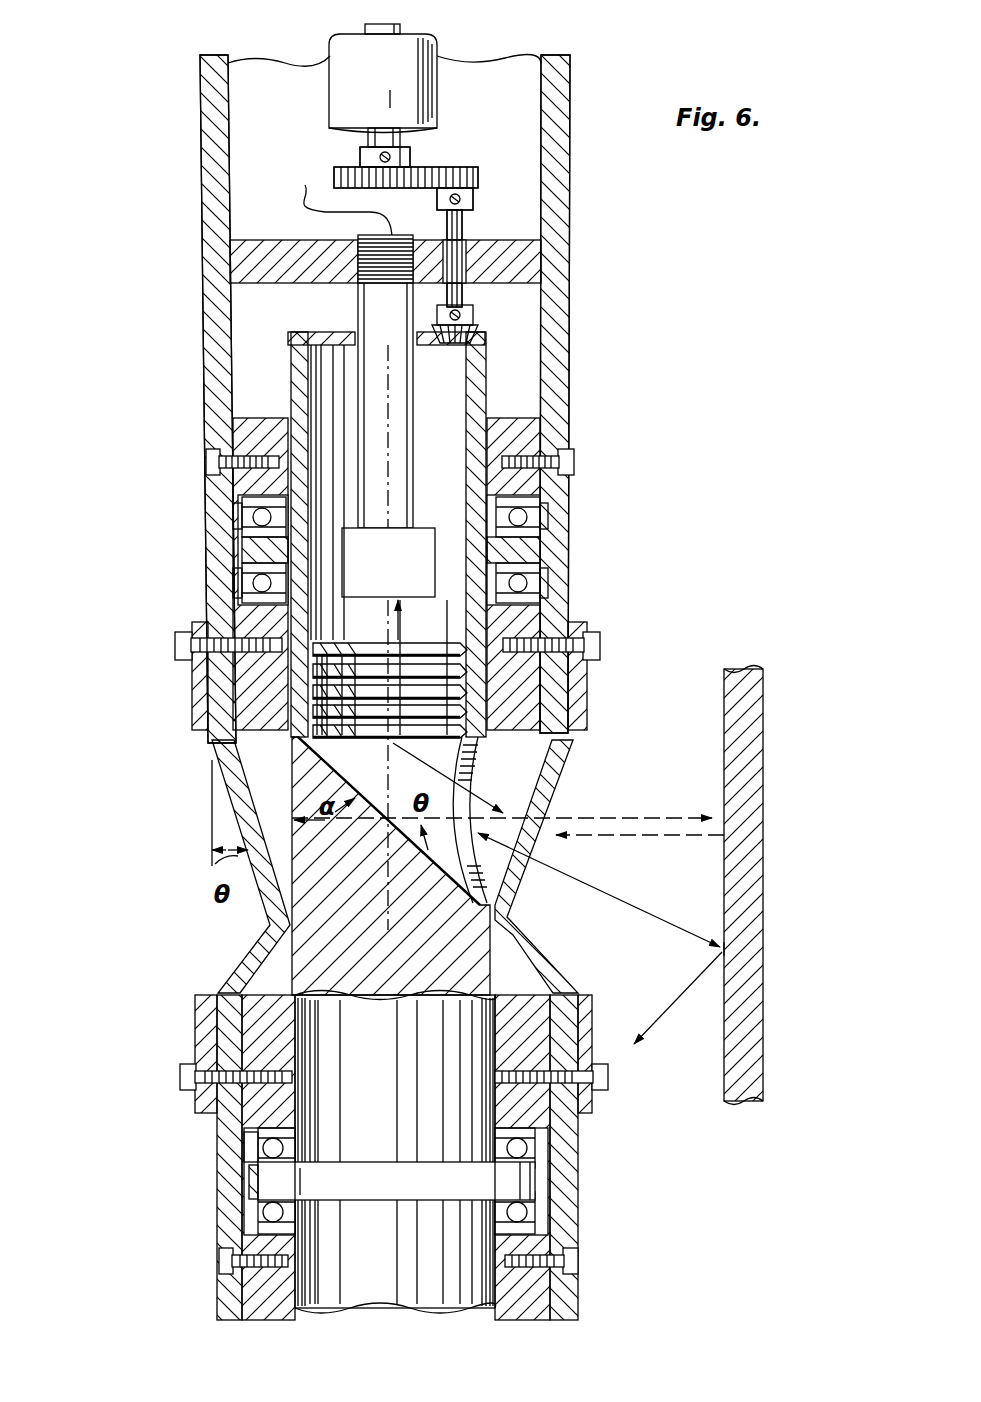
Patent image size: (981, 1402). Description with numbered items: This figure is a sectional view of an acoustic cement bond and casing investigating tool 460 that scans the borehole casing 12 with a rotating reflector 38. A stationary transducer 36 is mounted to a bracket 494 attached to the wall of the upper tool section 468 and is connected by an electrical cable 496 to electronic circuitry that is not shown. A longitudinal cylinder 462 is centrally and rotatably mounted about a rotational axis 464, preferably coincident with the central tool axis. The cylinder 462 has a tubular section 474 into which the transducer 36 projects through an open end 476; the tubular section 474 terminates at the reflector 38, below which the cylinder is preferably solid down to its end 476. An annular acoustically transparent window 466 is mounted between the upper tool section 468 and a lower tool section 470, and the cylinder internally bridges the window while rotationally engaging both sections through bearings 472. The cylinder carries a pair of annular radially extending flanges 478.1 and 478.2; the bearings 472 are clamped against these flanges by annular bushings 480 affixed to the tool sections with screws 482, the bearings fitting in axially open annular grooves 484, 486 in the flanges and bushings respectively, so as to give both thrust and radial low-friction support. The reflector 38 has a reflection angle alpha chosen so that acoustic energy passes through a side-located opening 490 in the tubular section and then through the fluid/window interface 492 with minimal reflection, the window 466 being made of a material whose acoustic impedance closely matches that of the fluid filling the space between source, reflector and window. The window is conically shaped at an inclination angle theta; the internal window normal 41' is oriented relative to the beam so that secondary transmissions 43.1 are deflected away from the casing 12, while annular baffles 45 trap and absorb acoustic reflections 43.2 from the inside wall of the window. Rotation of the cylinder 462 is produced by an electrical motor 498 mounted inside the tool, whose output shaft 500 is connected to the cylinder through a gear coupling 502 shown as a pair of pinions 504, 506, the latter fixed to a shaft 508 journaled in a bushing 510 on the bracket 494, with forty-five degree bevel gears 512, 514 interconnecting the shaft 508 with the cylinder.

The casing 12 is at (745, 1105).
The transducer 36 is at (432, 528).
The rotating reflector 38 is at (305, 768).
The internal window normal 41' is at (389, 821).
The secondary transmissions 43.1 is at (657, 905).
The acoustic reflections 43.2 is at (468, 796).
The baffles 45 is at (405, 658).
The acoustic cement bond and casing investigating tool 460 is at (648, 318).
The longitudinal cylinder 462 is at (477, 397).
The rotational axis 464 is at (378, 467).
The acoustic window 466 is at (562, 773).
The upper tool section 468 is at (590, 710).
The lower tool section 470 is at (593, 1012).
The bearings 472 is at (528, 513).
The tubular section 474 is at (303, 392).
The open end 476 is at (341, 321).
The annular radially extending flange 478.1 is at (540, 549).
The annular radially extending flange 478.2 is at (250, 1182).
The annular bushings 480 is at (535, 430).
The screws 482 is at (580, 462).
The annular groove 484 is at (237, 557).
The annular groove 486 is at (238, 490).
The side-located opening 490 is at (535, 878).
The fluid/window interface 492 is at (557, 792).
The bracket 494 is at (240, 242).
The electrical cable 496 is at (320, 204).
The electrical motor 498 is at (440, 50).
The output shaft 500 is at (377, 140).
The gear coupling 502 is at (494, 155).
The pinion 504 is at (360, 160).
The pinion 506 is at (478, 175).
The shaft 508 is at (467, 228).
The bushing 510 is at (472, 272).
The bevel gear 512 is at (440, 345).
The bevel gear 514 is at (330, 331).